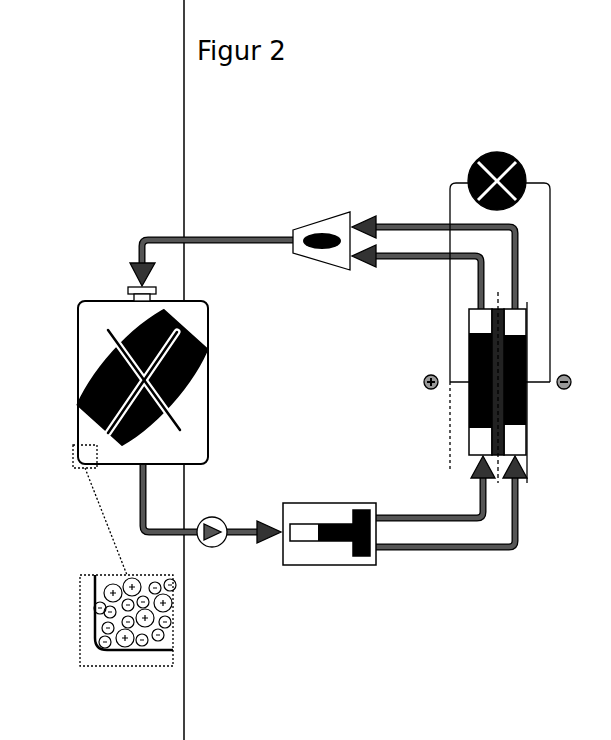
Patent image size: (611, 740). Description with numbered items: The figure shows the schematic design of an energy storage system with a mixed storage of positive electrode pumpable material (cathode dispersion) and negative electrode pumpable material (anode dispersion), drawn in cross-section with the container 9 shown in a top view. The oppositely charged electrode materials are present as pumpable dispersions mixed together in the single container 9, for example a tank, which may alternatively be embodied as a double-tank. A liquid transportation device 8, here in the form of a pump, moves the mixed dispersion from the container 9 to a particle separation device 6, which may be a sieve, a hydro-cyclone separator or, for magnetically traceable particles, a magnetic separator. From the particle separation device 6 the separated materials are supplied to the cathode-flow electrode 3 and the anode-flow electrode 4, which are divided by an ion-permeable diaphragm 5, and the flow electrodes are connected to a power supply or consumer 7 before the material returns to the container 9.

The cathode-flow electrode 3 is at (485, 408).
The anode-flow electrode 4 is at (513, 407).
The ion-permeable diaphragm 5 is at (497, 387).
The particle separation device 6 is at (333, 537).
The power supply or consumer 7 is at (491, 152).
The liquid transportation device 8 is at (214, 546).
The container 9 is at (105, 367).